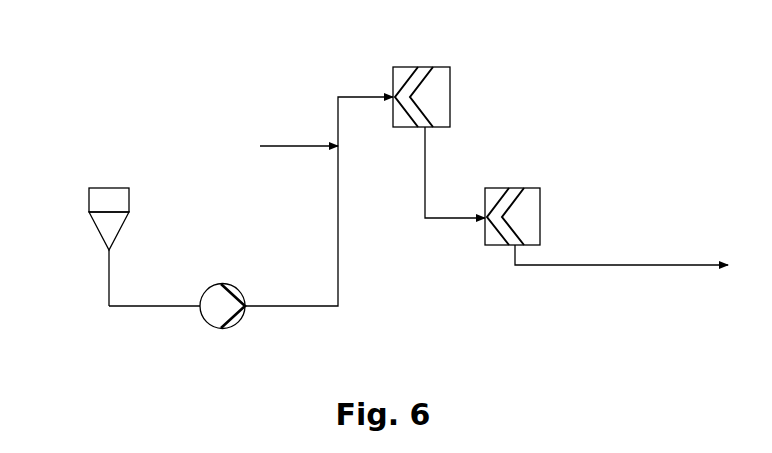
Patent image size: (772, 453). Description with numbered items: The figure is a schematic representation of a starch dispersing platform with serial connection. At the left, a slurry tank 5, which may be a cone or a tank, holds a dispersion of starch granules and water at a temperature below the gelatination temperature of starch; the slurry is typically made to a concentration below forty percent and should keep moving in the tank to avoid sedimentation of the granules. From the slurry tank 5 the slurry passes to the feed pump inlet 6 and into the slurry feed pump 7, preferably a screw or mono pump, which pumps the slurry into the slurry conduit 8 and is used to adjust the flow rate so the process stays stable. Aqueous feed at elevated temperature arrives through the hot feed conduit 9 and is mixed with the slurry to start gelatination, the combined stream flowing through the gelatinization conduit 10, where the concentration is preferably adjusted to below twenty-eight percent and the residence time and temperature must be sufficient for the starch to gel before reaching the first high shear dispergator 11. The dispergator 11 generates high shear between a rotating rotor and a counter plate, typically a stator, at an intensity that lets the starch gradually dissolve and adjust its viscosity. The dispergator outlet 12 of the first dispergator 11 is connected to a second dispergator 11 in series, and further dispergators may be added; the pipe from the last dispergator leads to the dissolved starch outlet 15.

The slurry tank 5 is at (98, 232).
The feed pump inlet 6 is at (168, 306).
The slurry feed pump 7 is at (221, 284).
The slurry conduit 8 is at (262, 306).
The hot feed conduit 9 is at (279, 146).
The gelatinization conduit 10 is at (347, 97).
The high shear dispergator 11 is at (408, 67).
The dispergator outlet 12 is at (424, 185).
The dissolved starch outlet 15 is at (652, 265).